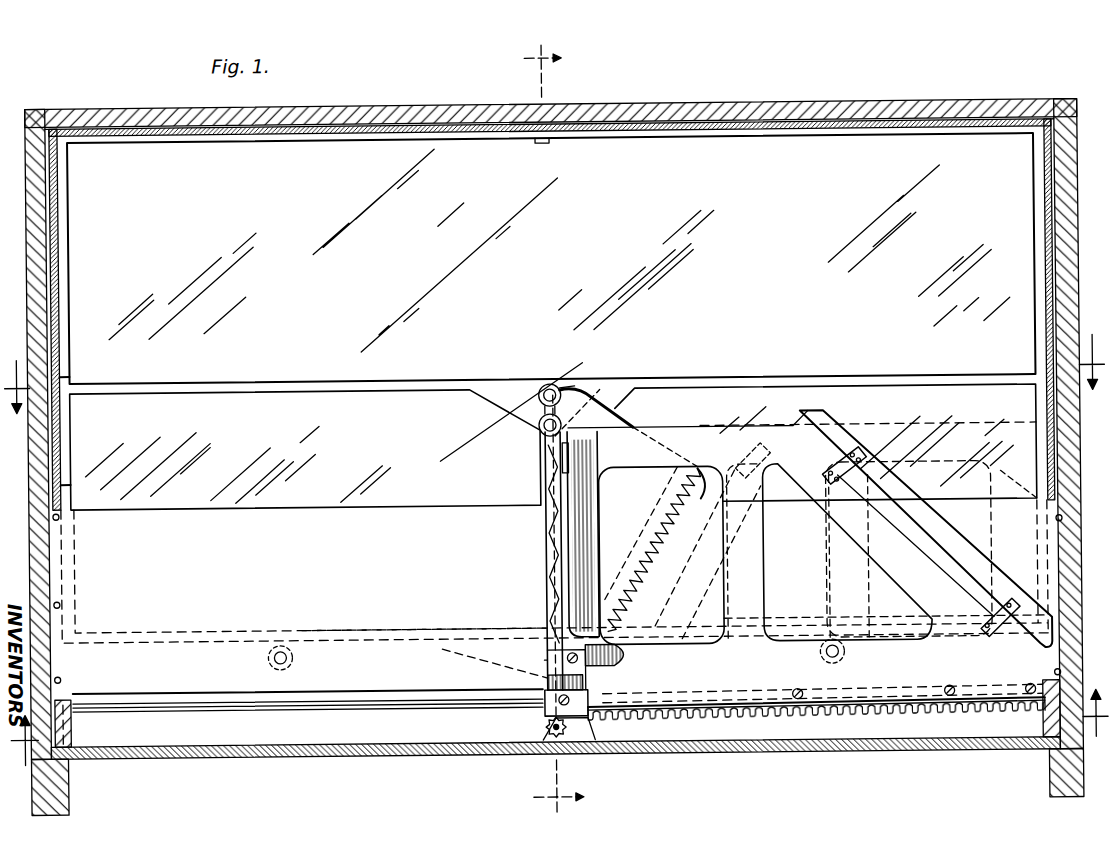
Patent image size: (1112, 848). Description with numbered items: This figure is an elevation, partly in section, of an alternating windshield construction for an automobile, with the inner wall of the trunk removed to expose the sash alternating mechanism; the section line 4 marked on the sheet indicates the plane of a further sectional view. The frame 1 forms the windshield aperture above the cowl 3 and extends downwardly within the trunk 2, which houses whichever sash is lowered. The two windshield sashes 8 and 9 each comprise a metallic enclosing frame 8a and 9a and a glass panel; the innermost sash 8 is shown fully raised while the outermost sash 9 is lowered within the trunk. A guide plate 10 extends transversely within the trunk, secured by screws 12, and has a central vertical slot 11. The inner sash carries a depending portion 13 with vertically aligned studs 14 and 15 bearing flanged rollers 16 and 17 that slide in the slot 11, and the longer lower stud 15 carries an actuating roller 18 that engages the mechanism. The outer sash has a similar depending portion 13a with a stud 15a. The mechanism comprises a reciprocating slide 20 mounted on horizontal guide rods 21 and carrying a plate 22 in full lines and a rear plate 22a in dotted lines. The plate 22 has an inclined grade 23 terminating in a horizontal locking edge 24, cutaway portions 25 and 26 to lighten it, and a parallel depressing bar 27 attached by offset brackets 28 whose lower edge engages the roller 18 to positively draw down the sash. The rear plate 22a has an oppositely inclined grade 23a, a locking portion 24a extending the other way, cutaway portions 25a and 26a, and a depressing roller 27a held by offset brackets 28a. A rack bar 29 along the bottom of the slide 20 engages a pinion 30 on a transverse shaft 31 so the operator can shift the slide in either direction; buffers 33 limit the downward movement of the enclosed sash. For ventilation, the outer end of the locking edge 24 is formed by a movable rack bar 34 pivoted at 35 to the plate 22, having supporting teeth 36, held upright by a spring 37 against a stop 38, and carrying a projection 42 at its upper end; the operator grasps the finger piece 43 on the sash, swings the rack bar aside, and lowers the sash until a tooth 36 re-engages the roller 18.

The frame 1 is at (418, 110).
The trunk 2 is at (552, 374).
The cowl 3 is at (560, 738).
The section line 4 is at (550, 430).
The innermost windshield sash 8 is at (551, 258).
The metallic enclosing frame 8a is at (72, 372).
The outermost windshield sash 9 is at (553, 447).
The metallic enclosing frame 9a is at (81, 478).
The guide plate 10 is at (555, 623).
The vertical slot 11 is at (545, 628).
The screws 12 is at (58, 600).
The depending portion 13 is at (511, 412).
The depending portion 13a is at (494, 664).
The stud 14 is at (558, 392).
The lower stud 15 is at (600, 392).
The stud 15a is at (543, 680).
The flanged roller 16 is at (583, 363).
The flanged roller 17 is at (625, 394).
The actuating roller 18 is at (540, 428).
The reciprocating slide 20 is at (556, 709).
The horizontal guide rods 21 is at (378, 702).
The plate 22 is at (859, 549).
The rear plate 22a is at (840, 609).
The inclined grade 23 is at (915, 560).
The inclined grade 23a is at (668, 558).
The horizontal locking edge 24 is at (695, 430).
The horizontal locking portion 24a is at (915, 426).
The cutaway portion 25 is at (600, 523).
The cutaway portion 25a is at (985, 489).
The cutaway portion 26 is at (763, 552).
The cutaway portion 26a is at (830, 576).
The depressing grade bar 27 is at (925, 533).
The depressing roller 27a is at (630, 560).
The brackets 28 is at (862, 456).
The offset brackets 28a is at (730, 462).
The rack bar 29 is at (765, 720).
The pinion 30 is at (565, 738).
The shaft 31 is at (545, 735).
The buffers 33 is at (268, 662).
The movable rack bar 34 is at (580, 500).
The pivot 35 is at (600, 668).
The supporting teeth 36 is at (545, 487).
The spring 37 is at (625, 612).
The stop 38 is at (585, 712).
The projection 42 is at (570, 457).
The finger piece 43 is at (543, 144).